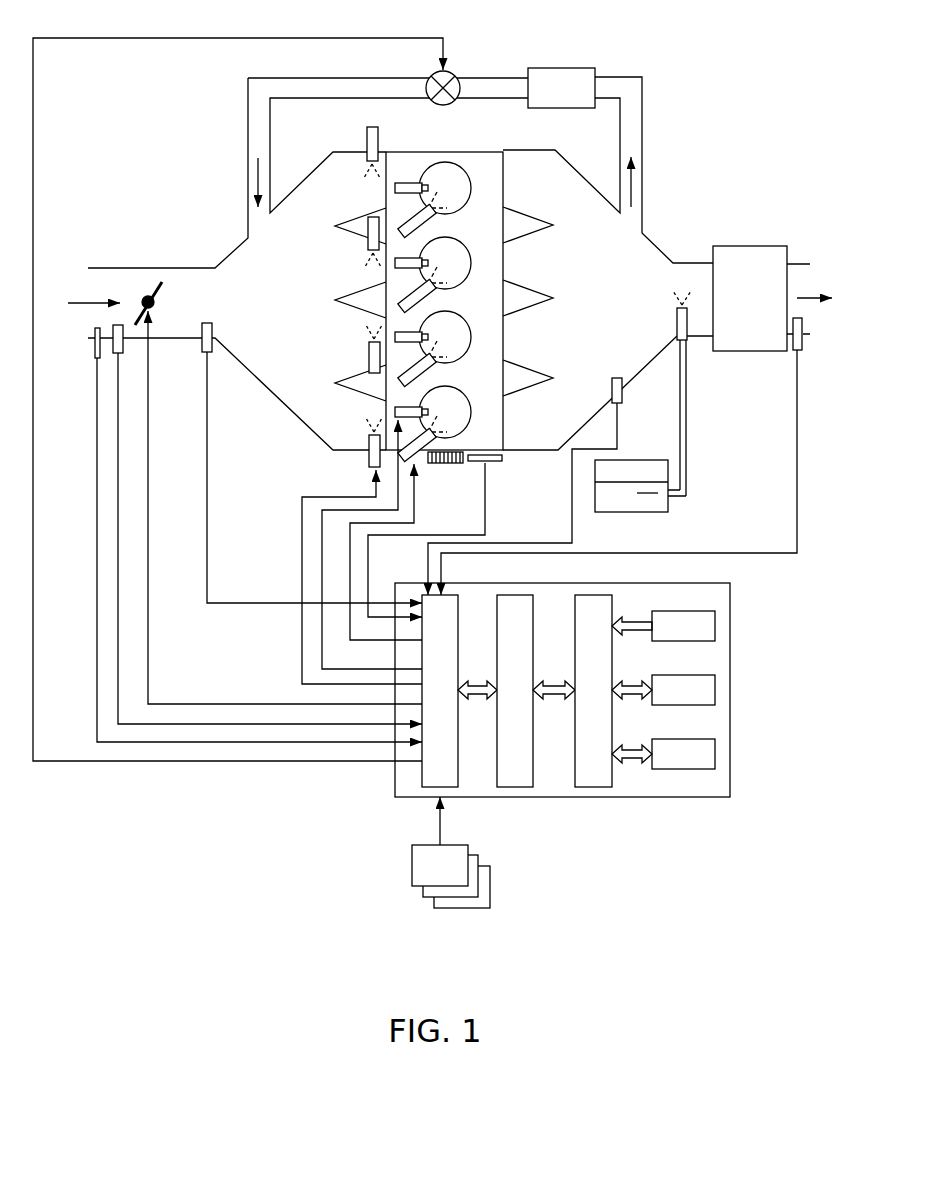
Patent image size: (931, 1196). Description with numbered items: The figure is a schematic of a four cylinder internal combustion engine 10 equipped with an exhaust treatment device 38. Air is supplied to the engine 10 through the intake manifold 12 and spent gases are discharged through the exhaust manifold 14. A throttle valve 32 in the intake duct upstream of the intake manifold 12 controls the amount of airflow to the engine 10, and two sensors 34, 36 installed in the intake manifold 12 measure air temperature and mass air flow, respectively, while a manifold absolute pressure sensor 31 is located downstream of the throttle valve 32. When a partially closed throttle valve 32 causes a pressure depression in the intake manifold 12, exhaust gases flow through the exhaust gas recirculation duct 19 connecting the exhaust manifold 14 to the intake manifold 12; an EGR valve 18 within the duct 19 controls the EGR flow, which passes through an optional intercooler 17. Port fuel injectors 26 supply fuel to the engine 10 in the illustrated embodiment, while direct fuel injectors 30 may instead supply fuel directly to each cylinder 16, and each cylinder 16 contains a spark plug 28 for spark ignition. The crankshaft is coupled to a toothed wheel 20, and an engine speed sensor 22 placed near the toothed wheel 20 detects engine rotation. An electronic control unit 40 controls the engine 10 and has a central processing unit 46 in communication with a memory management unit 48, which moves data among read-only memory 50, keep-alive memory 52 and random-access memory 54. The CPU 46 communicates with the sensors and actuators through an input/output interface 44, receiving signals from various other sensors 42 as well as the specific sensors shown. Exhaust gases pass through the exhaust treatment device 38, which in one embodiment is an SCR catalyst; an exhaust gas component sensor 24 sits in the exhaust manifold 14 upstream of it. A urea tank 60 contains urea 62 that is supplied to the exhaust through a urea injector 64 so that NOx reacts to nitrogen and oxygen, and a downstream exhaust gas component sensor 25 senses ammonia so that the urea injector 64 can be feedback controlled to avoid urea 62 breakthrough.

The internal combustion engine 10 is at (473, 151).
The intake manifold 12 is at (312, 172).
The exhaust manifold 14 is at (578, 172).
The cylinder 16 is at (443, 163).
The intercooler 17 is at (561, 88).
The EGR valve 18 is at (452, 73).
The exhaust gas recirculation duct 19 is at (382, 78).
The toothed wheel 20 is at (452, 466).
The engine speed sensor 22 is at (505, 460).
The exhaust gas component sensor 24 is at (620, 405).
The exhaust gas component sensor 25 is at (804, 338).
The port fuel injector 26 is at (368, 460).
The spark plugs 28 is at (393, 412).
The direct fuel injector 30 is at (413, 462).
The manifold absolute pressure sensor 31 is at (210, 355).
The throttle valve 32 is at (157, 285).
The air temperature sensor 34 is at (93, 345).
The mass airflow sensor 36 is at (125, 343).
The exhaust treatment device 38 is at (750, 298).
The electronic control unit 40 is at (685, 797).
The sensors 42 is at (463, 910).
The input/output interface 44 is at (452, 788).
The central processing unit 46 is at (515, 788).
The memory management unit 48 is at (592, 788).
The read-only memory 50 is at (717, 622).
The keep-alive memory 52 is at (717, 686).
The random-access memory 54 is at (717, 750).
The urea tank 60 is at (617, 513).
The urea 62 is at (660, 505).
The urea injector 64 is at (676, 322).